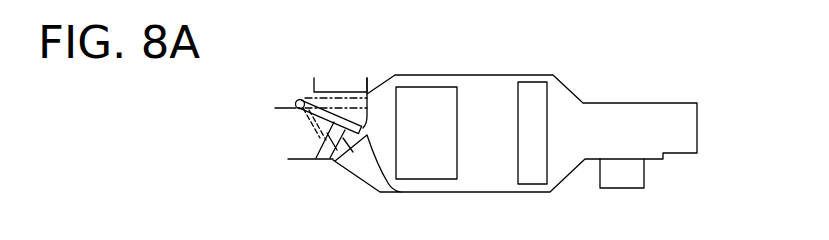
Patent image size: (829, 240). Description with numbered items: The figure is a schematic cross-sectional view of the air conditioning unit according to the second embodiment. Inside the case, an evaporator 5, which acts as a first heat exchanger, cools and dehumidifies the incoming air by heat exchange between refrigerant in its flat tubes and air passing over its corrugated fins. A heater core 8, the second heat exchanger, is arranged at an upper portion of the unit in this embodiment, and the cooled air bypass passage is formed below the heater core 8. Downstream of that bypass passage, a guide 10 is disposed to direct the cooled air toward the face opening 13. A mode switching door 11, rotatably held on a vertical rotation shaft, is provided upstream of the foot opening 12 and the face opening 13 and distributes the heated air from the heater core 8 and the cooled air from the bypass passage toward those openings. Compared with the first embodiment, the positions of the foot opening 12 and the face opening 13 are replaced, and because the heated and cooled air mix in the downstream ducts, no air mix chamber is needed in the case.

The evaporator 5 is at (532, 95).
The heater core 8 is at (420, 97).
The guide 10 is at (367, 166).
The mode switching door 11 is at (322, 160).
The foot opening 12 is at (293, 134).
The face opening 13 is at (340, 88).